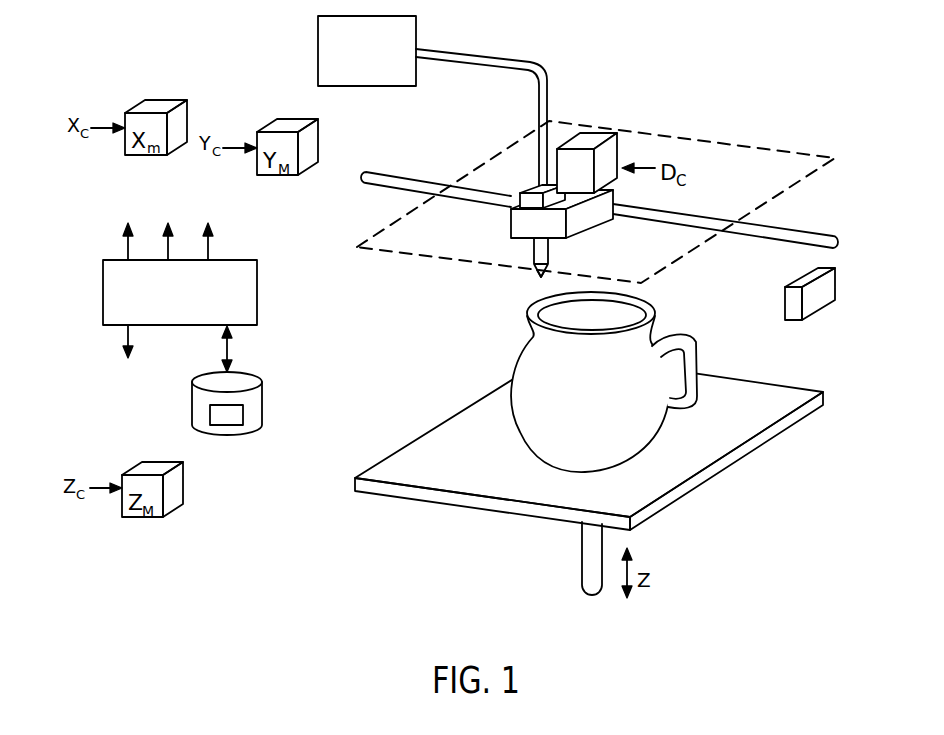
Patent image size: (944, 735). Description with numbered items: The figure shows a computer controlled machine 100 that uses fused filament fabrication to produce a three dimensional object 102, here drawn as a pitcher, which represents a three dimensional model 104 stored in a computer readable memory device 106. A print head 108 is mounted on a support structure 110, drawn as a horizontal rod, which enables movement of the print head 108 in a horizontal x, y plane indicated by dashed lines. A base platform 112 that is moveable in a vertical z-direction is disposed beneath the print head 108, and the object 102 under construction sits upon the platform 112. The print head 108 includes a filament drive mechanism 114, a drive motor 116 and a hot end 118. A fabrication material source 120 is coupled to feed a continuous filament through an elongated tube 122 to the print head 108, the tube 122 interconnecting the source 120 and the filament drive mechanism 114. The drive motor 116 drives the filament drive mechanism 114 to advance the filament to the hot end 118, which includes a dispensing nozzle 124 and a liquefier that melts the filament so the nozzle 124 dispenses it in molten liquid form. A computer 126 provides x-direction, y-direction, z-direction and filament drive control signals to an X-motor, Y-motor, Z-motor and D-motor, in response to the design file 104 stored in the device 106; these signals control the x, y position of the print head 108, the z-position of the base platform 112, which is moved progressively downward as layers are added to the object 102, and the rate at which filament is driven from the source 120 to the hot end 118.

The computer controlled machine 100 is at (677, 91).
The three dimensional object 102 is at (668, 326).
The three dimensional model 104 is at (246, 418).
The computer readable memory device 106 is at (249, 380).
The print head 108 is at (510, 222).
The support structure 110 is at (389, 173).
The base platform 112 is at (758, 148).
The filament drive mechanism 114 is at (522, 190).
The drive motor 116 is at (590, 134).
The hot end 118 is at (549, 258).
The fabrication material source 120 is at (318, 28).
The elongated tube 122 is at (458, 53).
The dispensing nozzle 124 is at (539, 279).
The computer 126 is at (103, 266).